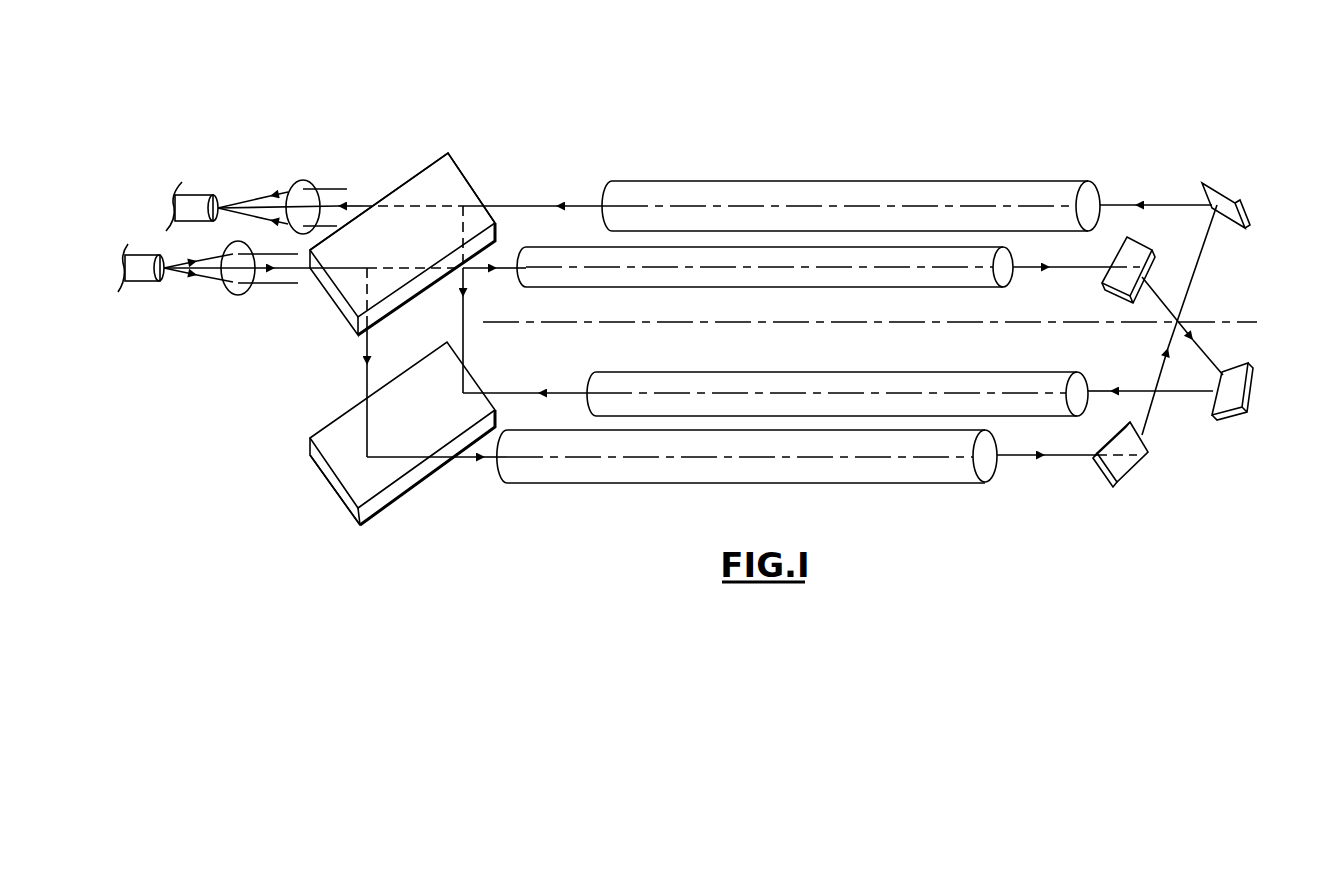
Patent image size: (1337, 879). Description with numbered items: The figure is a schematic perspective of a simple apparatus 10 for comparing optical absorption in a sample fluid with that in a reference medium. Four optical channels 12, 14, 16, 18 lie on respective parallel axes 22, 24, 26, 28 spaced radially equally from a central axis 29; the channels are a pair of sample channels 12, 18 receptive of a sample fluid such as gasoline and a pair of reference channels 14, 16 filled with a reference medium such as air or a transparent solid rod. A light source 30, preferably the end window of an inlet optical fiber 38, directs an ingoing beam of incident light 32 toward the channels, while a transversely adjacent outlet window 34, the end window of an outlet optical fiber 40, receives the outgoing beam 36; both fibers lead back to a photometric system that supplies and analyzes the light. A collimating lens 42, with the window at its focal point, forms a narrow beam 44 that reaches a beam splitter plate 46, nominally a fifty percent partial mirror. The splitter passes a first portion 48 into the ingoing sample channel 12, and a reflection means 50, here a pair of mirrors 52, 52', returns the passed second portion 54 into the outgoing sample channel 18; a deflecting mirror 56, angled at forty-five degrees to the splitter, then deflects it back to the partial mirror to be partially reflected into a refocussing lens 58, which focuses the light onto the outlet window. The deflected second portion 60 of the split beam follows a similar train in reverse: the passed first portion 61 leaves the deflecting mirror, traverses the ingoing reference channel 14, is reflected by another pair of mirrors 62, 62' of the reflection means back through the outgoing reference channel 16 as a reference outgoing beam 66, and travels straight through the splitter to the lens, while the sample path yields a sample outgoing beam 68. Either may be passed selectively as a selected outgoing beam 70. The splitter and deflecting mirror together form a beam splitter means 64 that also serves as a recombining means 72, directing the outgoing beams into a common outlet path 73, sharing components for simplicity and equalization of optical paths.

The apparatus 10 is at (718, 92).
The ingoing sample channel 12 is at (558, 290).
The ingoing reference channel 14 is at (545, 483).
The outgoing reference channel 16 is at (630, 180).
The outgoing sample channel 18 is at (613, 372).
The axis 22 is at (670, 270).
The axis 24 is at (652, 457).
The axis 26 is at (730, 206).
The axis 28 is at (698, 393).
The central axis 29 is at (868, 328).
The light source 30 is at (161, 283).
The ingoing beam of incident light 32 is at (215, 297).
The outlet window 34 is at (218, 197).
The outgoing beam 36 is at (268, 180).
The inlet optical fiber 38 is at (133, 287).
The outlet optical fiber 40 is at (192, 194).
The collimating lens 42 is at (238, 296).
The narrow beam 44 is at (278, 288).
The beam splitter plate 46 is at (348, 326).
The first portion of the incident light beam 48 is at (478, 262).
The reflection means 50 is at (1172, 146).
The mirror 52 is at (1146, 255).
The mirror 52' is at (1263, 391).
The passed second portion 54 is at (1083, 270).
The deflecting mirror 56 is at (343, 470).
The refocussing lens 58 is at (294, 183).
The deflected second portion of the split beam 60 is at (366, 392).
The passed first portion 61 is at (1067, 460).
The mirror 62 is at (1136, 459).
The mirror 62' is at (1241, 188).
The beam splitter means 64 is at (366, 534).
The reference outgoing beam 66 is at (530, 206).
The sample outgoing beam 68 is at (524, 392).
The selected outgoing beam 70 is at (362, 206).
The recombining means 72 is at (467, 135).
The common outlet path 73 is at (347, 188).